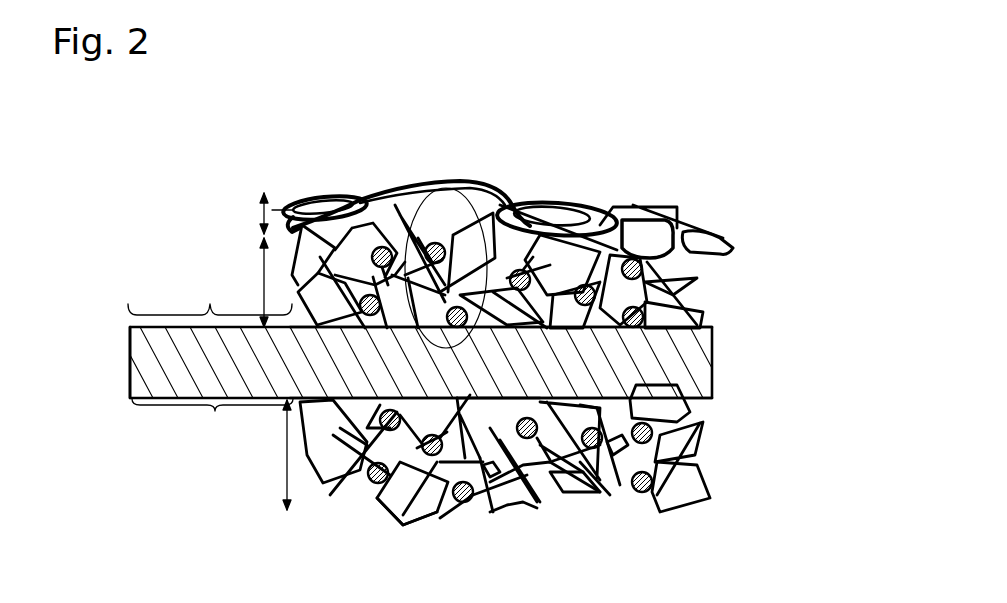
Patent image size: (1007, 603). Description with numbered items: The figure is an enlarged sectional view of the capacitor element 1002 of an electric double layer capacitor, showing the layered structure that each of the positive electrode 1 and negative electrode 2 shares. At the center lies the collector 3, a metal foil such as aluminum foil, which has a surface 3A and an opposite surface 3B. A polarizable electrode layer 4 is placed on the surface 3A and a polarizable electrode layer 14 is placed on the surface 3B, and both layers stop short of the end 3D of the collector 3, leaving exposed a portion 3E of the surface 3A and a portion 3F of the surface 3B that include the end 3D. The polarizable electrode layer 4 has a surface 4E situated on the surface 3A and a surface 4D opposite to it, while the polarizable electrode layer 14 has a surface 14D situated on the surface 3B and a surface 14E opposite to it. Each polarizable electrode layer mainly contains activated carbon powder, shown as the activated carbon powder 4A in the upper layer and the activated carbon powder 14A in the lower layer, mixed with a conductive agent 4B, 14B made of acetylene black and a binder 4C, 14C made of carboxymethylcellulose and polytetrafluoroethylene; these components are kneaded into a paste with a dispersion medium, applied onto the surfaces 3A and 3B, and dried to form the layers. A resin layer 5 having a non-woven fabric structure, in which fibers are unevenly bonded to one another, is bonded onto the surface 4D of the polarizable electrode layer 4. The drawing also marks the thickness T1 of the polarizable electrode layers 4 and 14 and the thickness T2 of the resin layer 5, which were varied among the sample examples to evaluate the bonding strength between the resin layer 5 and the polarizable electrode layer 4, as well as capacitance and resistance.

The positive electrode 1 is at (475, 335).
The negative electrode 2 is at (475, 335).
The capacitor element 1002 is at (680, 167).
The collector 3 is at (713, 360).
The surface 3A is at (489, 330).
The surface 3B is at (510, 398).
The end 3D is at (133, 363).
The portion 3E is at (210, 291).
The portion 3F is at (212, 423).
The polarizable electrode layer 4 is at (806, 232).
The activated carbon powder 4A is at (647, 321).
The conductive agent 4B is at (678, 285).
The binder 4C is at (680, 302).
The surface 4D is at (360, 188).
The surface 4E is at (407, 330).
The resin layer 5 is at (578, 205).
The polarizable electrode layer 14 is at (814, 390).
The activated carbon powder 14A is at (653, 430).
The conductive agent 14B is at (683, 480).
The binder 14C is at (657, 452).
The surface 14D is at (470, 395).
The surface 14E is at (388, 523).
The thickness T1 is at (263, 287).
The thickness T2 is at (262, 197).